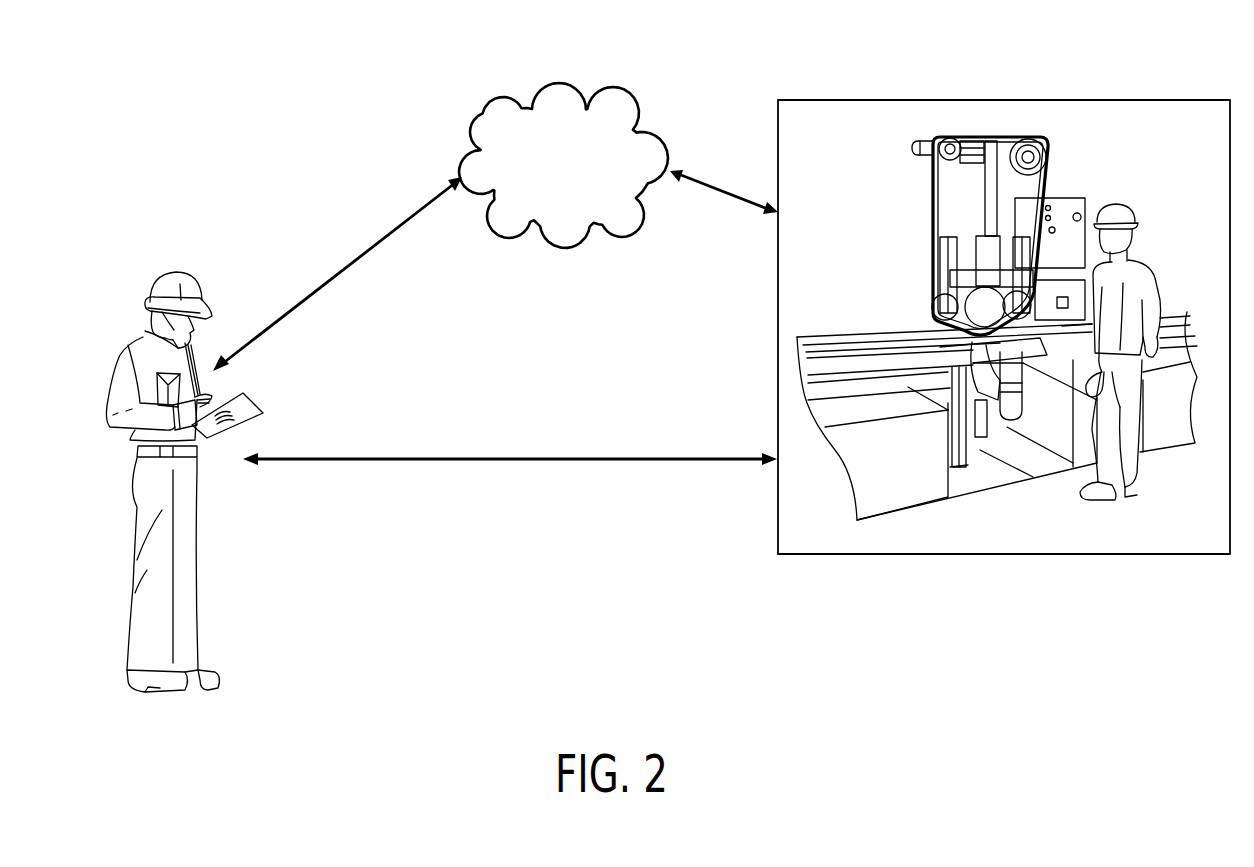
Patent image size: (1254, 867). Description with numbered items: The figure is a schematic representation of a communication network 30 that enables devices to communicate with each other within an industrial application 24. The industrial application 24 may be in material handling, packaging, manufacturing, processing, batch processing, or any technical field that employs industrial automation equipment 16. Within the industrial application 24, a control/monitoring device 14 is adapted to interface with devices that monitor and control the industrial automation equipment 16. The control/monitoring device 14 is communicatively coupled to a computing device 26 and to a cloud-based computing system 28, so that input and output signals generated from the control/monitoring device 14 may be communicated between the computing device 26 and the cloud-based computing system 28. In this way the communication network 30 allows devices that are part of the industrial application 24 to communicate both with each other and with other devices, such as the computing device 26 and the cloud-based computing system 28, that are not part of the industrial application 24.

The control/monitoring device 14 is at (1062, 200).
The industrial automation equipment 16 is at (921, 157).
The industrial application 24 is at (1005, 100).
The computing device 26 is at (257, 402).
The cloud-based computing system 28 is at (557, 83).
The communication network 30 is at (747, 78).